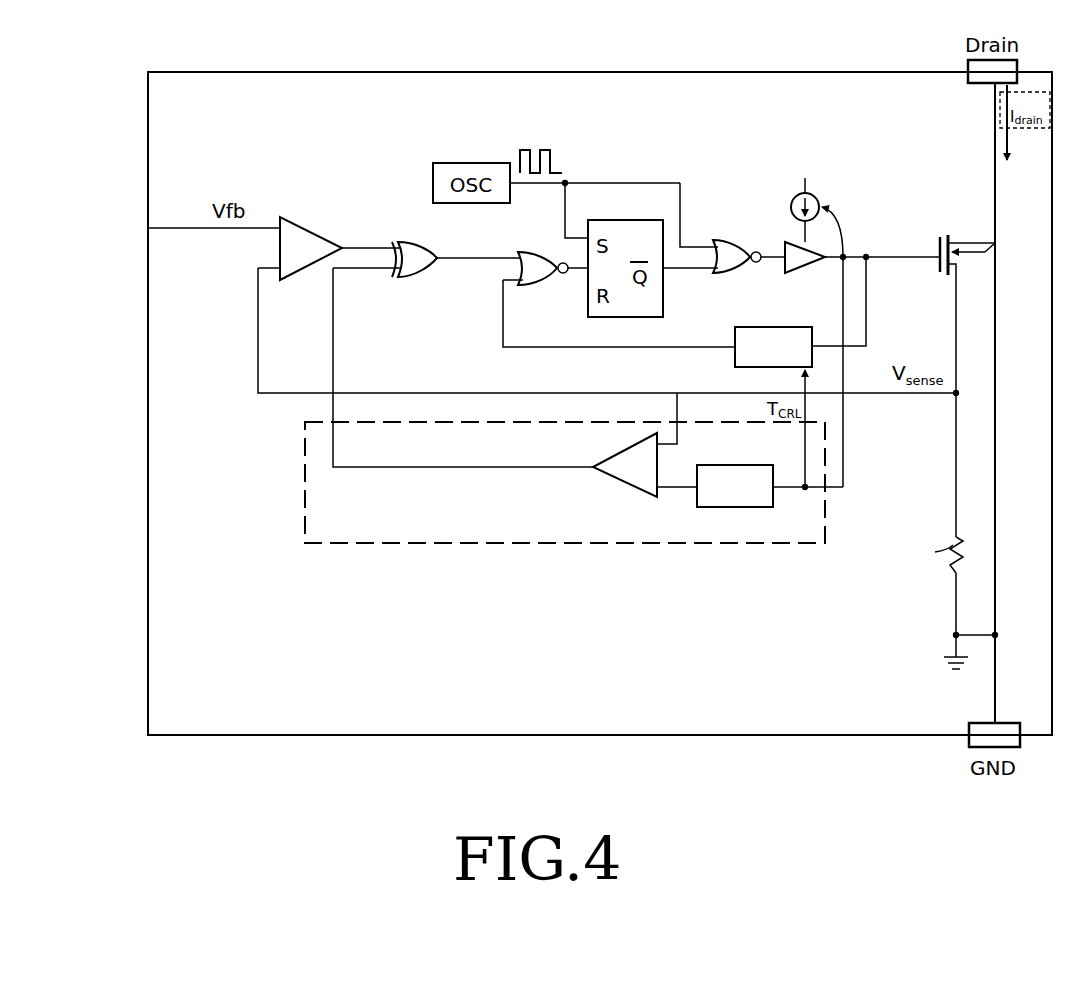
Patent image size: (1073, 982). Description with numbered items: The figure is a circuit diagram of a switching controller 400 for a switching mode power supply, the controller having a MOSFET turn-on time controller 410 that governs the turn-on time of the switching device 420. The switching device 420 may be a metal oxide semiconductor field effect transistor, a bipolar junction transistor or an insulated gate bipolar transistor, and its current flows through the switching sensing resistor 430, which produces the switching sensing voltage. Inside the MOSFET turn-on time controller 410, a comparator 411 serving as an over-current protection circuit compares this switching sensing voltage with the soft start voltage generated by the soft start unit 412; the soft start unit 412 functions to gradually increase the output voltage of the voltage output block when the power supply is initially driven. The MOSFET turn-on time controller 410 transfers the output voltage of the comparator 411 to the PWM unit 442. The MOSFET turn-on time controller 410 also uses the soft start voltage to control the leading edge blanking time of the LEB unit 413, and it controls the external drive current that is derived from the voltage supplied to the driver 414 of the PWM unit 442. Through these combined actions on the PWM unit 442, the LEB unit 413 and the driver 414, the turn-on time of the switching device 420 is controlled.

The switching controller 400 is at (562, 72).
The PWM unit 442 is at (295, 221).
The driver 414 is at (843, 222).
The LEB unit 413 is at (777, 327).
The switching device 420 is at (995, 243).
The switching sensing resistor 430 is at (956, 537).
The MOSFET turn-on time controller 410 is at (702, 543).
The comparator 411 is at (623, 486).
The soft start unit 412 is at (710, 465).